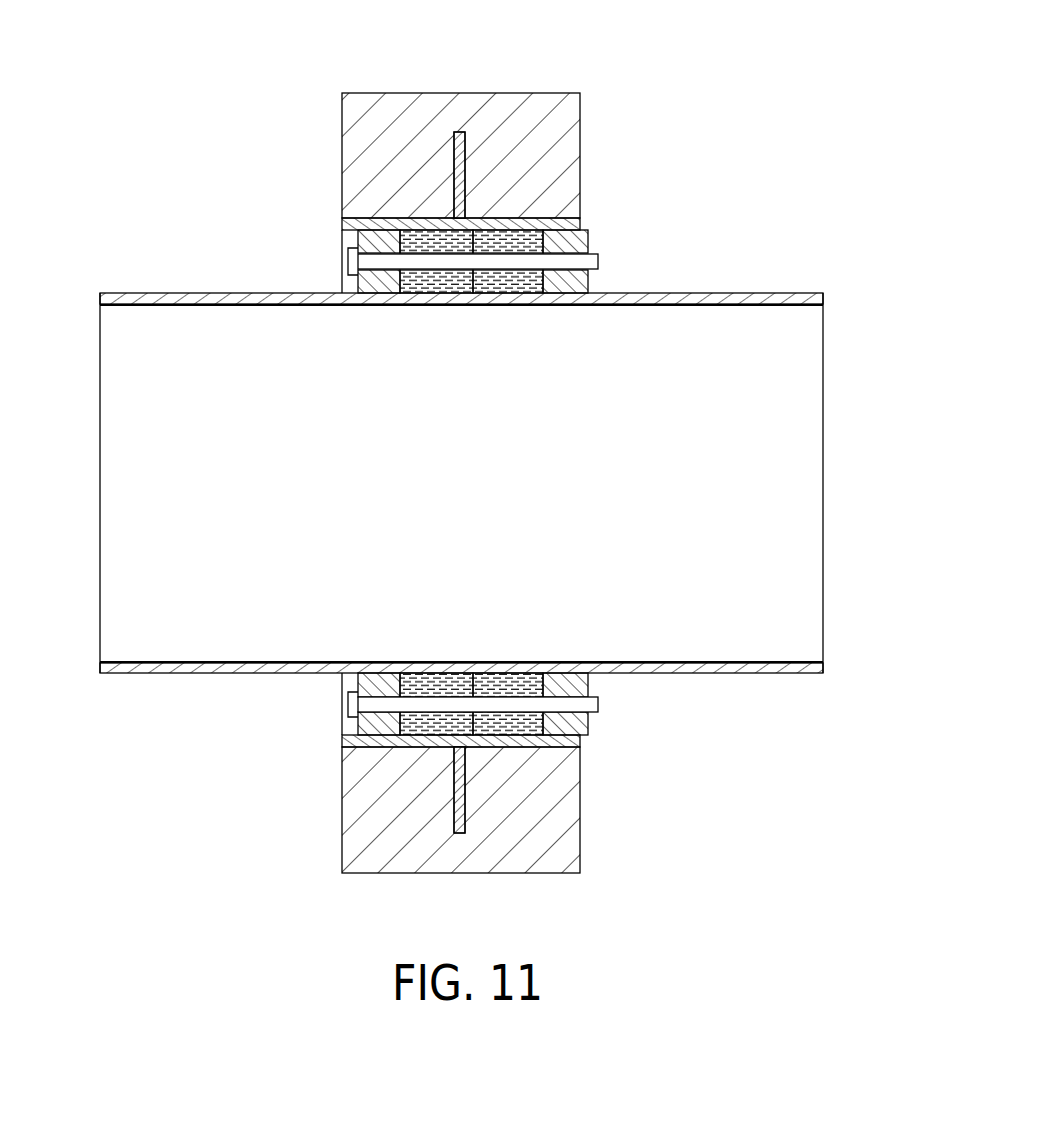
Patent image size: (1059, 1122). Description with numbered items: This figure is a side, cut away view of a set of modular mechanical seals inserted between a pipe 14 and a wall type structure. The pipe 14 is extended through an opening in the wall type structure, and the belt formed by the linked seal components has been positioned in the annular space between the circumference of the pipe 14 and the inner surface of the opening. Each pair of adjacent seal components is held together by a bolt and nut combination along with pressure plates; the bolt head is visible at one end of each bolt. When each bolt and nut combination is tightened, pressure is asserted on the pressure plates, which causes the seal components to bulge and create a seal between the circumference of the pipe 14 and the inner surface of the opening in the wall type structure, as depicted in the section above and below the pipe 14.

The pipe 14 is at (776, 292).